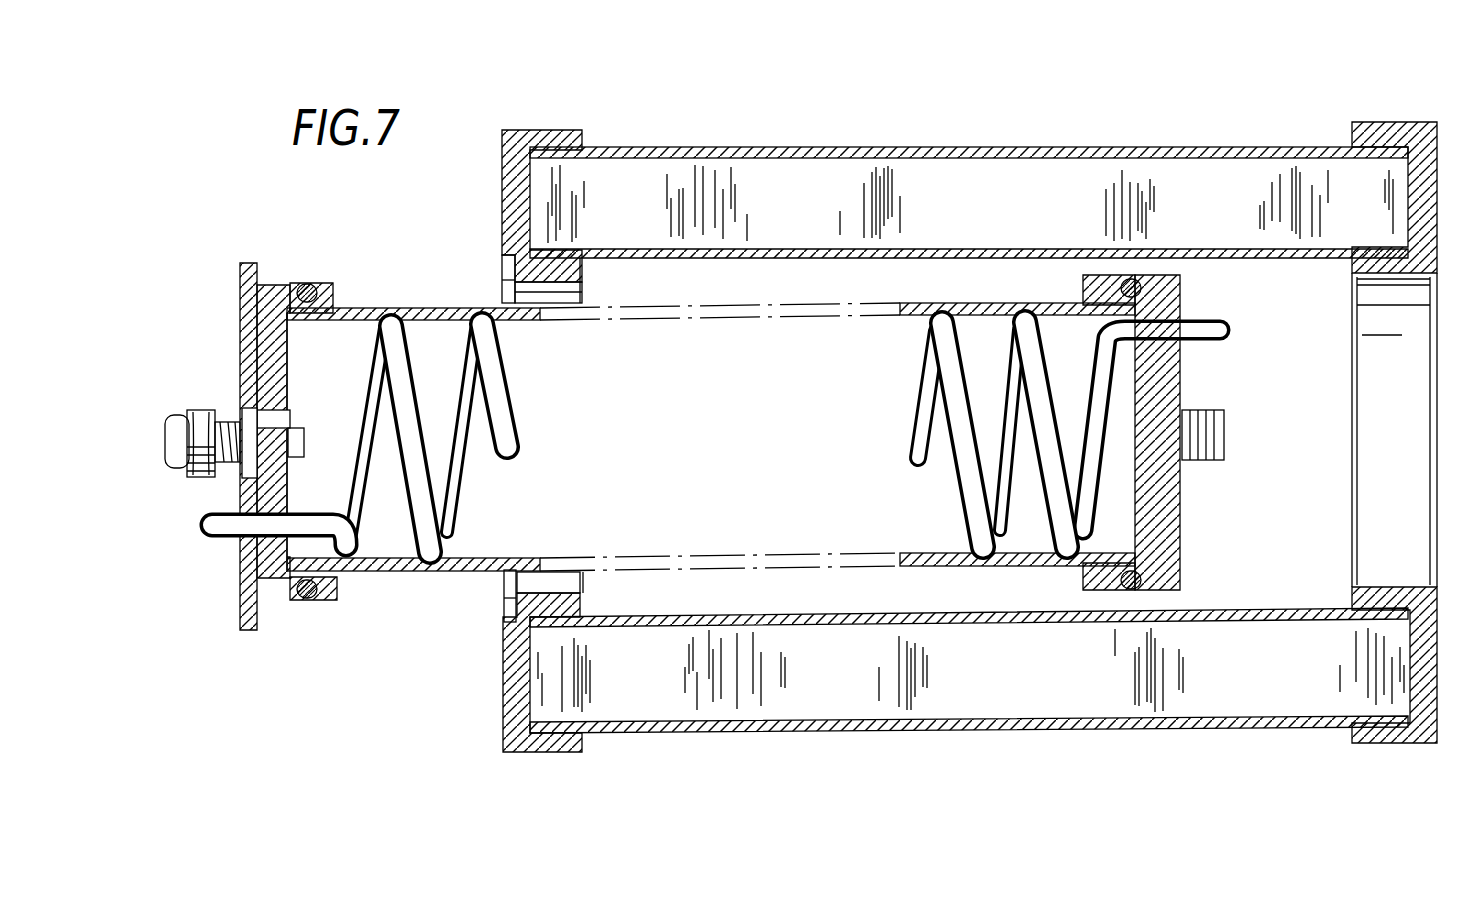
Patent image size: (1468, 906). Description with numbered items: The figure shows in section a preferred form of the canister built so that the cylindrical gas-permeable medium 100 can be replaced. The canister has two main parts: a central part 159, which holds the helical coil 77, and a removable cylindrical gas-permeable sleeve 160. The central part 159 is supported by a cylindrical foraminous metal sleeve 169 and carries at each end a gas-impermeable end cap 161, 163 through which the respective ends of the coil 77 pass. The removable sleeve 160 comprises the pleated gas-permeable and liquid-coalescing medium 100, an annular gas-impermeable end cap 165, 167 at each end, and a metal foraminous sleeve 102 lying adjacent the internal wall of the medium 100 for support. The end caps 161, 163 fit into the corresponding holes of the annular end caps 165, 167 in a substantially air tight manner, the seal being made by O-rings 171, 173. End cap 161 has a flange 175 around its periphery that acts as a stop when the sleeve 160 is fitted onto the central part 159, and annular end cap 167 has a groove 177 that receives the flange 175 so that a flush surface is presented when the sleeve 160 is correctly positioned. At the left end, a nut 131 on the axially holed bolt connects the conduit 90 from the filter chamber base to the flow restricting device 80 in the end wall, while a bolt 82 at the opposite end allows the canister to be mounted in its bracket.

The helical coil 77 is at (1107, 370).
The flow restricting device 80 is at (297, 430).
The bolt 82 is at (1226, 440).
The conduit 90 is at (179, 430).
The cylindrical gas-permeable medium 100 is at (921, 710).
The metal foraminous sleeve 102 is at (1060, 620).
The nut 131 is at (197, 483).
The central part 159 is at (391, 288).
The removable cylindrical gas-permeable sleeve 160 is at (826, 128).
The gas-impermeable end cap 161 is at (248, 590).
The gas-impermeable end cap 163 is at (1158, 533).
The annular gas-impermeable end cap 165 is at (1422, 720).
The annular gas-impermeable end cap 167 is at (500, 738).
The cylindrical foraminous metal sleeve 169 is at (393, 574).
The O-ring 171 is at (306, 604).
The O-ring 173 is at (1142, 287).
The flange 175 is at (246, 262).
The groove 177 is at (505, 272).